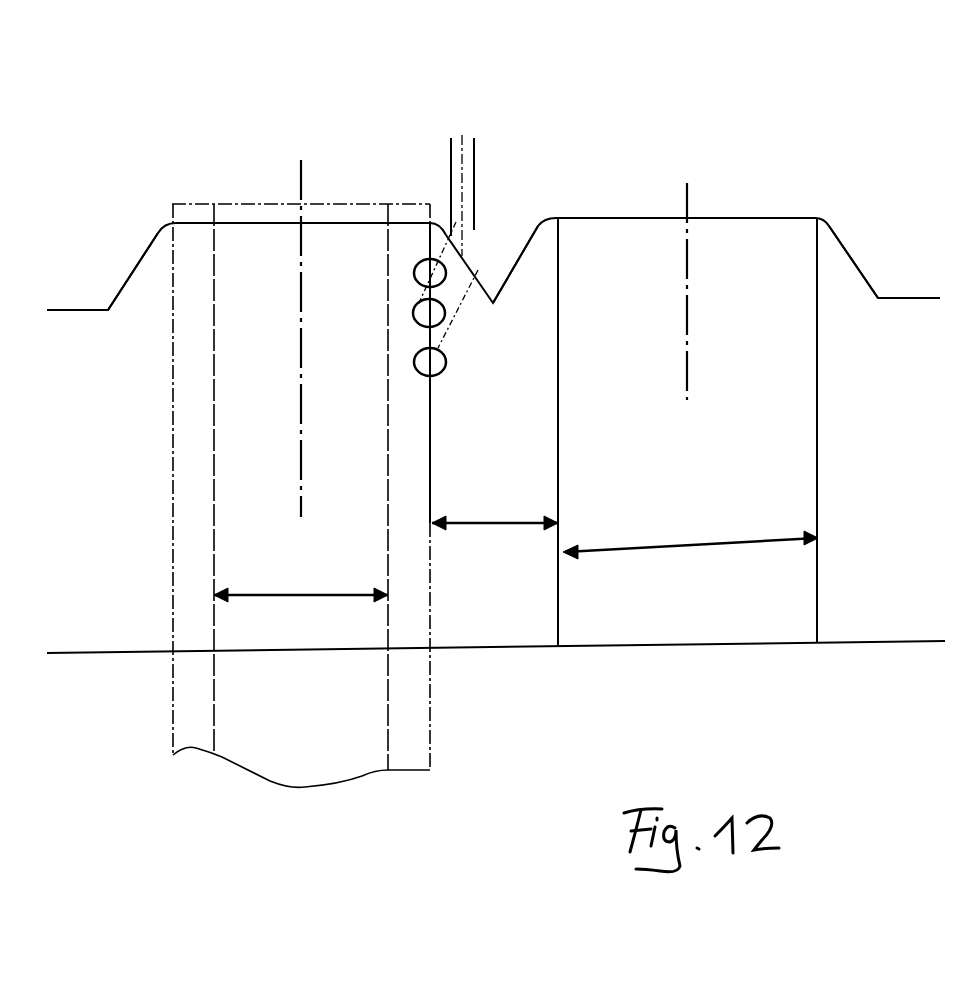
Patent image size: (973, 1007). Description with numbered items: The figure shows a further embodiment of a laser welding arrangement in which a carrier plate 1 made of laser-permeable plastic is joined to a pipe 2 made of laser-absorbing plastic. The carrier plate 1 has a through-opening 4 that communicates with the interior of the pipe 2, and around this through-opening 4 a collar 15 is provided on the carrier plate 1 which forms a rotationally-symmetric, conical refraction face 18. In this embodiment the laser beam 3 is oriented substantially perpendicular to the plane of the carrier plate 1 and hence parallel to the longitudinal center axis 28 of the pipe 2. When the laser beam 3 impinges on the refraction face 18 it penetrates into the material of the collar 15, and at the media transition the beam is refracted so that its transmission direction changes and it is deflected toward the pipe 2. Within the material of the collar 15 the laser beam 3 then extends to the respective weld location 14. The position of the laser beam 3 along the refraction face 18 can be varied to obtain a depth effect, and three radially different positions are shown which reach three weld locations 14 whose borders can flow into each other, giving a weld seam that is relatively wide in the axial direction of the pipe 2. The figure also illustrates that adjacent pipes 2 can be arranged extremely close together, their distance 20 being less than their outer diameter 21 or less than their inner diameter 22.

The carrier plate 1 is at (74, 301).
The pipe 2 is at (208, 267).
The laser beam 3 is at (448, 152).
The through-opening 4 is at (563, 405).
The weld location 14 is at (413, 283).
The collar 15 is at (844, 258).
The refraction face 18 is at (135, 253).
The distance 20 is at (484, 520).
The outer diameter 21 is at (688, 542).
The inner diameter 22 is at (289, 593).
The longitudinal center axis 28 is at (318, 173).